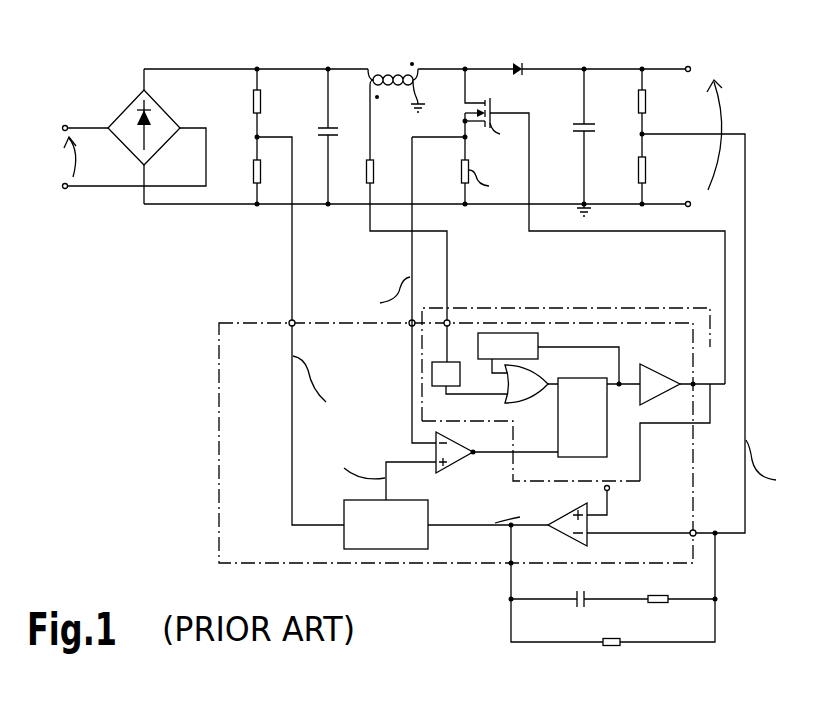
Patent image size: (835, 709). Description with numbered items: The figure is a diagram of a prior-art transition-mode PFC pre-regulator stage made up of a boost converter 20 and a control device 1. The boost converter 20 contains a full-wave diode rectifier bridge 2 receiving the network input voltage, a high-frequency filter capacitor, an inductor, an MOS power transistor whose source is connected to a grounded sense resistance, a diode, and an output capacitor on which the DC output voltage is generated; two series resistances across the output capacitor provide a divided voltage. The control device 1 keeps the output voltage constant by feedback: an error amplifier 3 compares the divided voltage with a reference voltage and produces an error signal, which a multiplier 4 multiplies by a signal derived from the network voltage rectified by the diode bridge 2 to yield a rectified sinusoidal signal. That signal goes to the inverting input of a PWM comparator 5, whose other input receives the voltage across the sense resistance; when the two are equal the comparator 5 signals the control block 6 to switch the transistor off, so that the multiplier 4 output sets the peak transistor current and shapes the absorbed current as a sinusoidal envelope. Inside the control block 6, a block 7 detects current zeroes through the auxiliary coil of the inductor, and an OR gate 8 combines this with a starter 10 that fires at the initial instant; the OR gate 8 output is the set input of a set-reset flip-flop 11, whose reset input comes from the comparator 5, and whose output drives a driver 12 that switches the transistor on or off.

The boost converter 20 is at (336, 47).
The full-wave diode rectifier bridge 2 is at (122, 118).
The control device 1 is at (218, 400).
The control block 6 is at (712, 307).
The current zero detector block 7 is at (455, 385).
The starter 10 is at (521, 357).
The OR gate 8 is at (533, 395).
The set-reset flip-flop 11 is at (598, 412).
The driver 12 is at (658, 382).
The PWM comparator 5 is at (462, 456).
The multiplier 4 is at (396, 540).
The error amplifier 3 is at (593, 522).